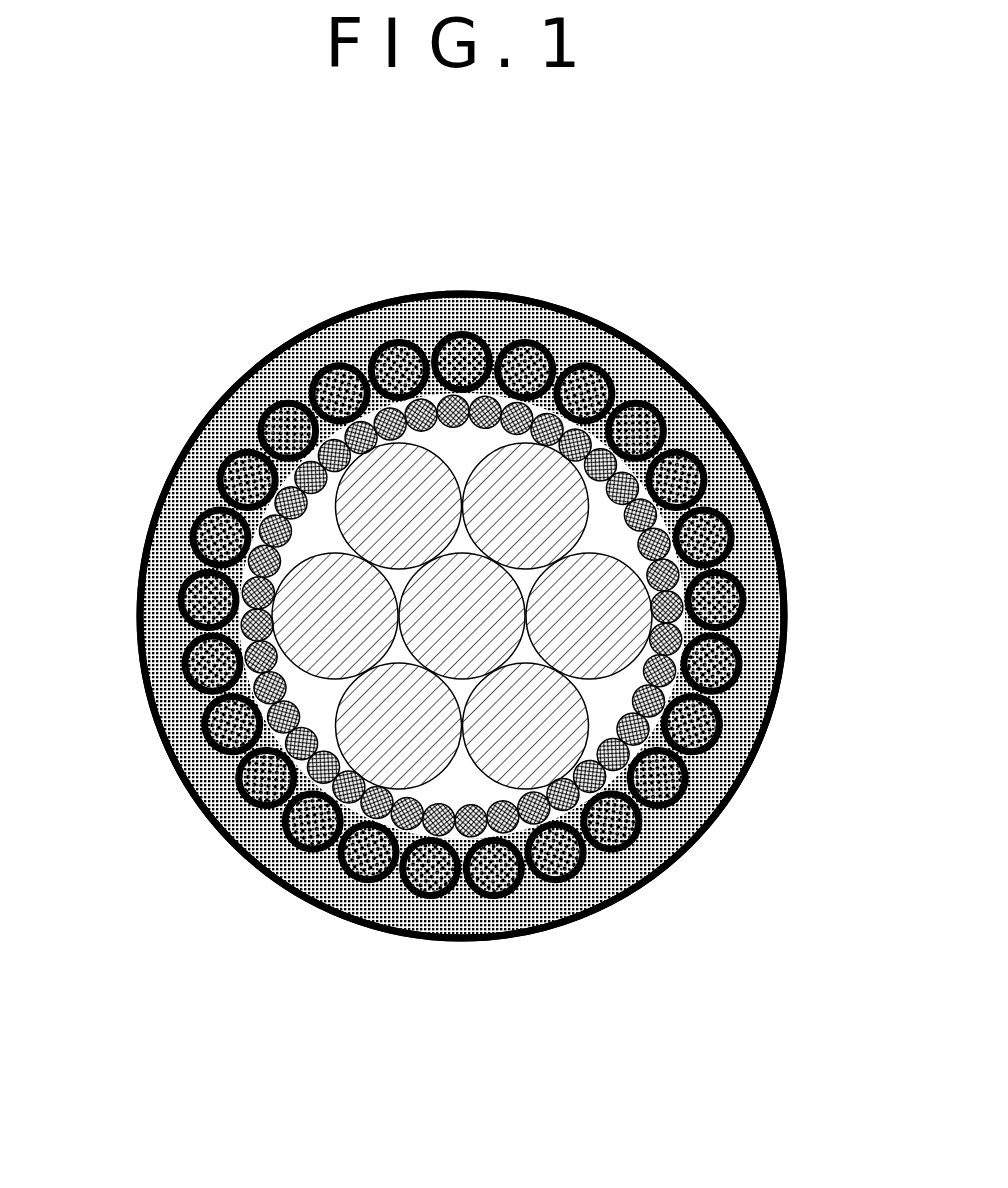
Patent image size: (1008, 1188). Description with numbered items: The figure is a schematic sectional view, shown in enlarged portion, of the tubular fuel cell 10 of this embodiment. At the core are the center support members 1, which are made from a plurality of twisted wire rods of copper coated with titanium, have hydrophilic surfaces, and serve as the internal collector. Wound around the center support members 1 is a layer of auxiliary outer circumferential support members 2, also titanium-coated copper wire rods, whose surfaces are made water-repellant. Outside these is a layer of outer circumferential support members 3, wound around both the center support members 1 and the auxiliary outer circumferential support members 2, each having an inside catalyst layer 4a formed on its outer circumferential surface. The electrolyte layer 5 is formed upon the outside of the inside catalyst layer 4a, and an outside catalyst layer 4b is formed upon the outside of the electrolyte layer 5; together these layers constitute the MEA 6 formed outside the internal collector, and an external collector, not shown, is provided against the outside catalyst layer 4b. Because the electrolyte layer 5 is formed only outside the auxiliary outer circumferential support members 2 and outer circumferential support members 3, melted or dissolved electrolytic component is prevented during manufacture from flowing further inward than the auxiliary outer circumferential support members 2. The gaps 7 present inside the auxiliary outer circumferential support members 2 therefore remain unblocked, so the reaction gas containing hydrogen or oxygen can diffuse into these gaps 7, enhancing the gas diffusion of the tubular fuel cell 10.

The tubular fuel cell 10 is at (447, 216).
The center support members 1 is at (228, 601).
The auxiliary outer circumferential support members 2 is at (305, 825).
The outer circumferential support members 3 is at (210, 727).
The inside catalyst layer 4a is at (207, 712).
The outside catalyst layer 4b is at (753, 757).
The electrolyte layer 5 is at (735, 793).
The MEA 6 is at (815, 767).
The gaps 7 is at (613, 527).